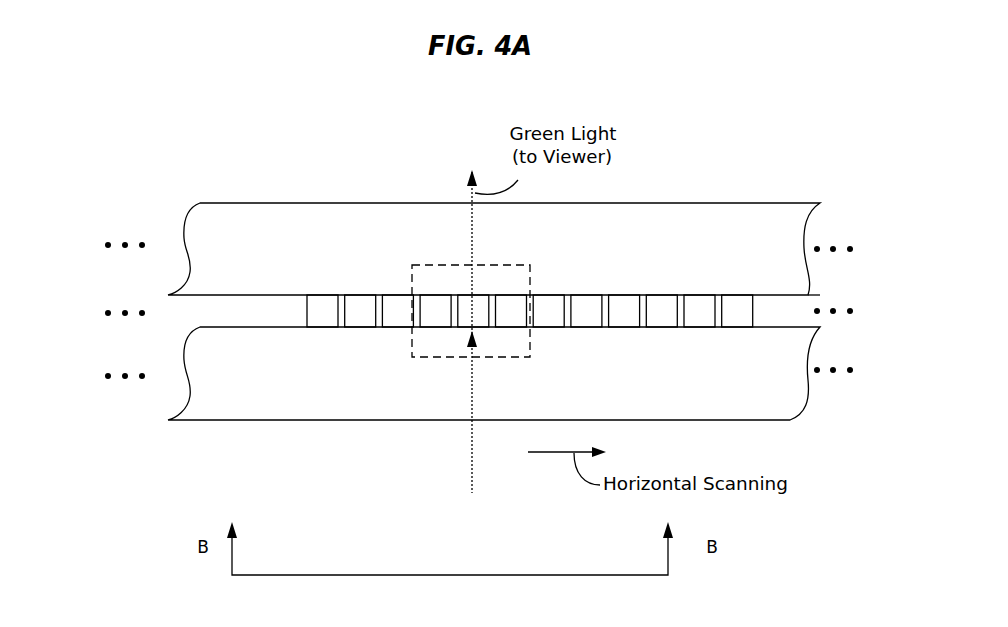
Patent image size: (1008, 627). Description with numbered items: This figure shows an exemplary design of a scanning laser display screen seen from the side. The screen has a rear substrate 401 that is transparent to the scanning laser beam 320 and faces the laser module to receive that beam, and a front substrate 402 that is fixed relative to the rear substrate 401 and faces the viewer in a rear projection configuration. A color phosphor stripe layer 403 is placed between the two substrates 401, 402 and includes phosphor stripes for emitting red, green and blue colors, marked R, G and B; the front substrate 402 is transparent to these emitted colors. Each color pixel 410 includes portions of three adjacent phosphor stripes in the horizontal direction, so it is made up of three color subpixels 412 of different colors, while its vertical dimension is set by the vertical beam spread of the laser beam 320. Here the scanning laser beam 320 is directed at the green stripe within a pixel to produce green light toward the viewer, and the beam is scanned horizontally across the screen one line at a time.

The color phosphor stripe layer 403 is at (451, 219).
The color subpixel 412 is at (372, 268).
The front substrate 402 is at (643, 258).
The color pixel 410 is at (425, 352).
The rear substrate 401 is at (648, 395).
The scanning laser beam 320 is at (472, 437).